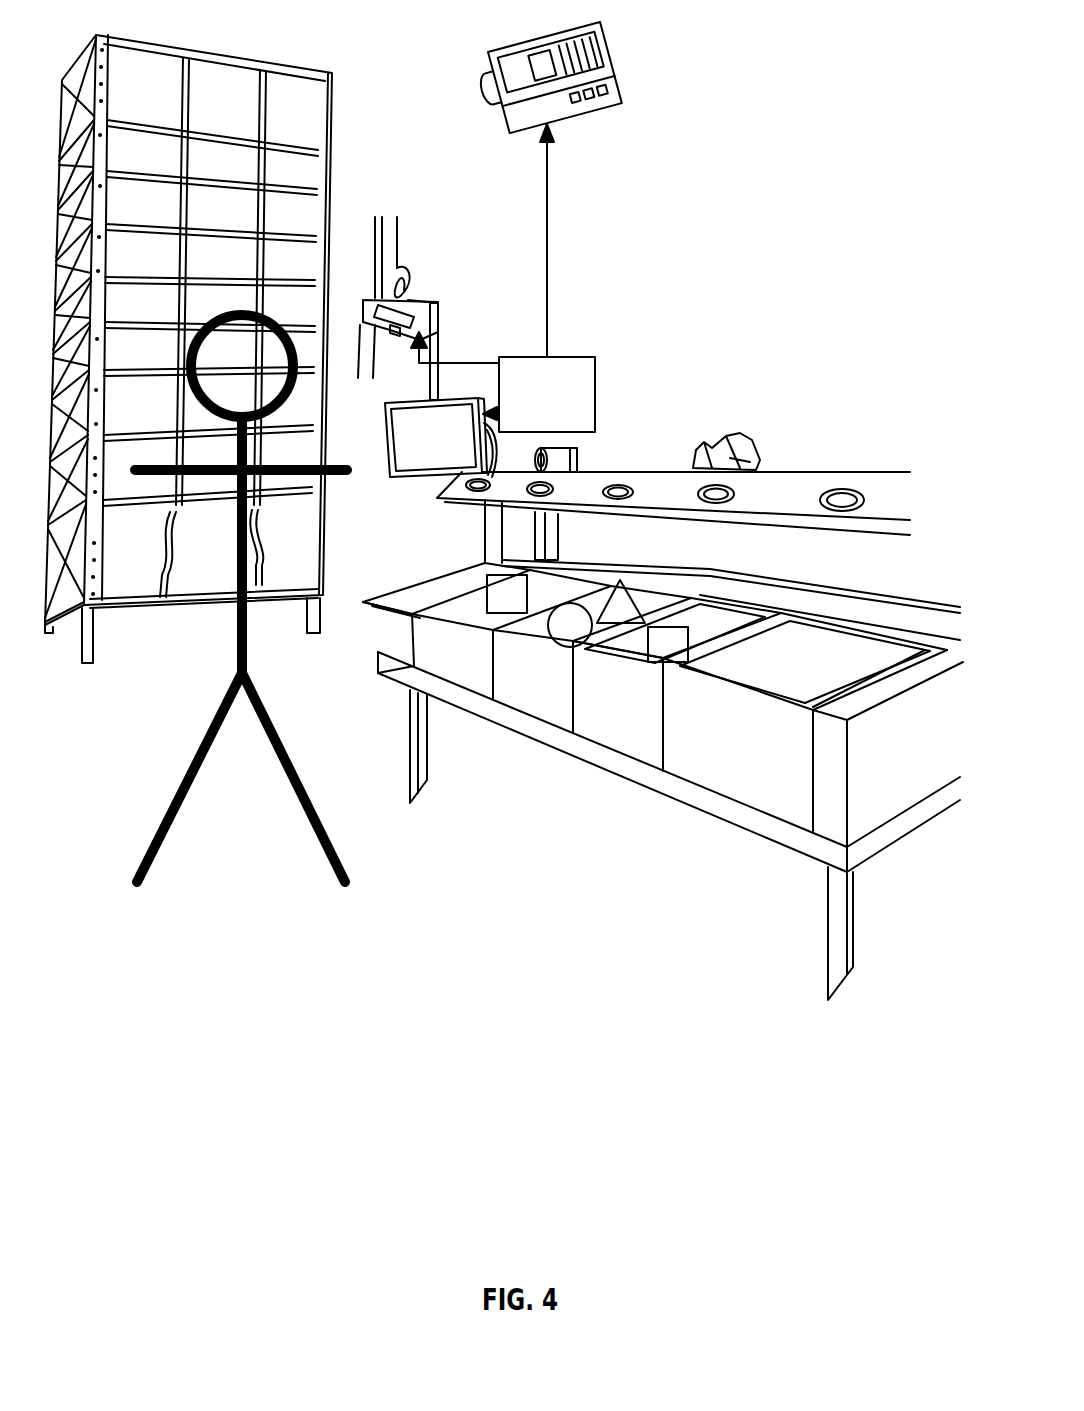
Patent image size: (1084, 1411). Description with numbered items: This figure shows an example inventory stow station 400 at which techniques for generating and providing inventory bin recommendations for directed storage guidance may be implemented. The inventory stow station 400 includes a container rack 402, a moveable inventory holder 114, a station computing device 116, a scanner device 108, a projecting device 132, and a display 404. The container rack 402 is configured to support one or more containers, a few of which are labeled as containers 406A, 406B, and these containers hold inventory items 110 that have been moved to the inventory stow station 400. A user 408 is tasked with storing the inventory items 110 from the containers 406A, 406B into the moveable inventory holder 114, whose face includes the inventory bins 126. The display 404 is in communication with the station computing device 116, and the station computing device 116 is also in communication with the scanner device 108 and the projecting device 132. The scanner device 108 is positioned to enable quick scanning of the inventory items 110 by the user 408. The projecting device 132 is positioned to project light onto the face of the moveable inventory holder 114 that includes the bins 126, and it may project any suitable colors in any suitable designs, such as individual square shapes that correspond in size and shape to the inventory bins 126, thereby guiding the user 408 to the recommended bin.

The inventory stow station 400 is at (822, 72).
The moveable inventory holder 114 is at (330, 66).
The inventory bins 126 is at (305, 116).
The user 408 is at (237, 622).
The projecting device 132 is at (625, 82).
The station computing device 116 is at (565, 410).
The scanner device 108 is at (410, 297).
The display 404 is at (440, 458).
The container rack 402 is at (688, 792).
The container 406A is at (397, 638).
The container 406B is at (595, 720).
The inventory items 110 is at (497, 640).